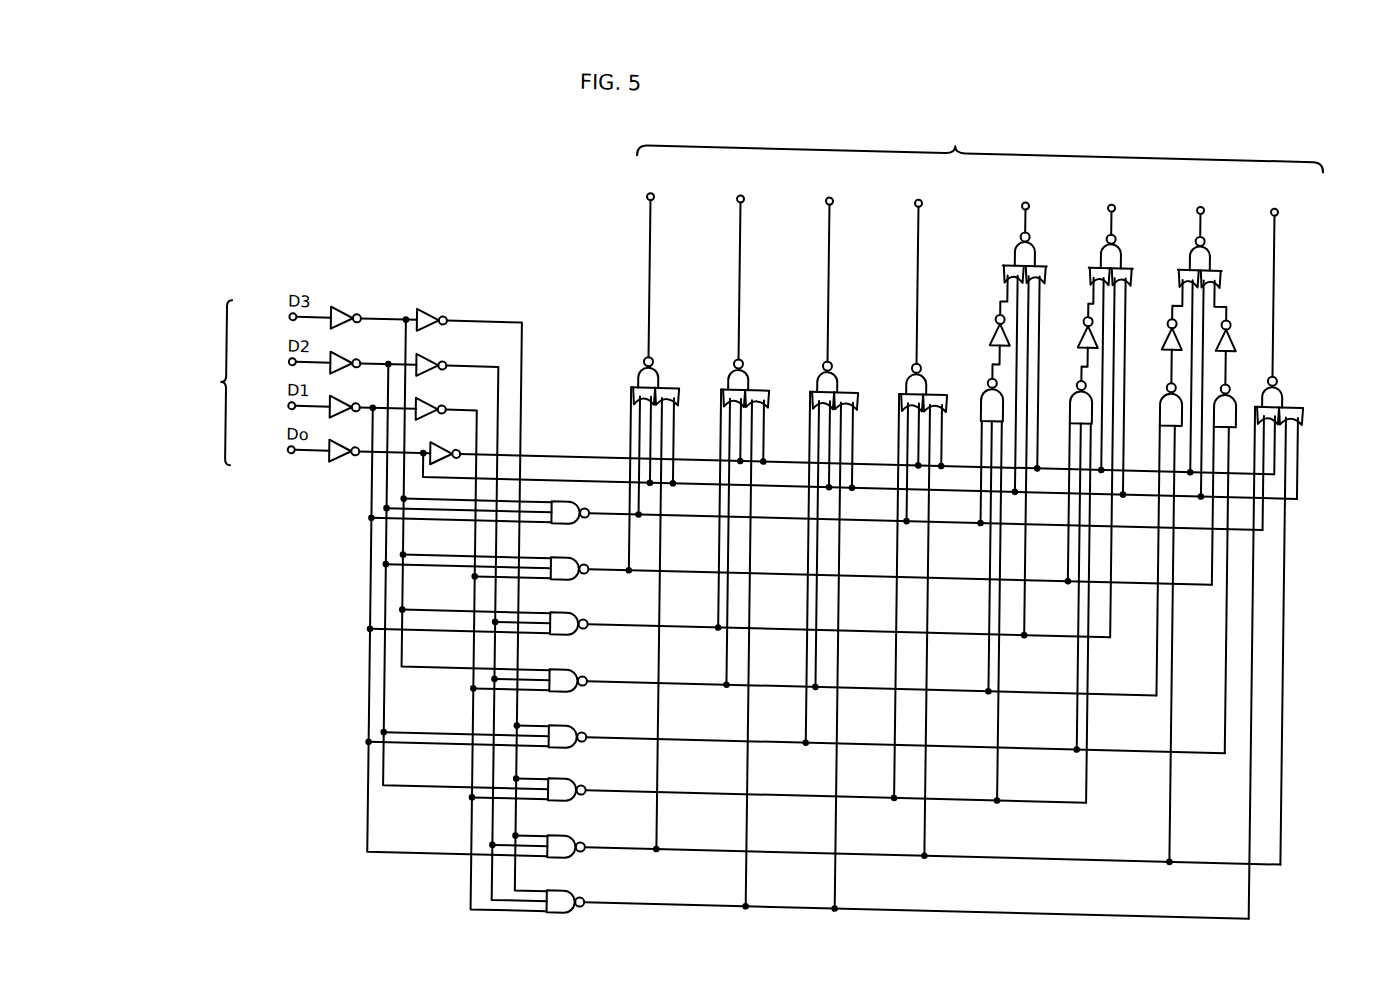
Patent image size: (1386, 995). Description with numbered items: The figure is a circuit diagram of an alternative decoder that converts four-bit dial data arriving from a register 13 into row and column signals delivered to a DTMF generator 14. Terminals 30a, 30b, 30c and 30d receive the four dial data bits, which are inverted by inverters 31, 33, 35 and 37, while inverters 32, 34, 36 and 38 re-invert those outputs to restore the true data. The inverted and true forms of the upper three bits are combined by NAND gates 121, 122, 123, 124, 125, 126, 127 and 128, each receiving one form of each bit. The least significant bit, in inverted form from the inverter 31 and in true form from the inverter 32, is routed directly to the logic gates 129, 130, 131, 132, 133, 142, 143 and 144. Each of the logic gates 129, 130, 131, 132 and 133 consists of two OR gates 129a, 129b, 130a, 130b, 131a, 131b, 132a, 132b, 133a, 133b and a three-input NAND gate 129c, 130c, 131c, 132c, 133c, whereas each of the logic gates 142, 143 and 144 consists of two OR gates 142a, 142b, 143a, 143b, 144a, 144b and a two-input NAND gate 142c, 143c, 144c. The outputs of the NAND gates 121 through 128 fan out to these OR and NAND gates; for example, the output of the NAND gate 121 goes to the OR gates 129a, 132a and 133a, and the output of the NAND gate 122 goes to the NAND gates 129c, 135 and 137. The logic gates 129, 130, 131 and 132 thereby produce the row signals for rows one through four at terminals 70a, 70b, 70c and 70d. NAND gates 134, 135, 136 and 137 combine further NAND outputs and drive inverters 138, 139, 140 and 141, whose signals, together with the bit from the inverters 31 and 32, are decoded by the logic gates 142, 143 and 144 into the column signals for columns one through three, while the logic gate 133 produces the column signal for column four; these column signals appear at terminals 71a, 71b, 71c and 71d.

The register 13 is at (171, 381).
The DTMF generator 14 is at (980, 140).
The terminal 30a is at (286, 461).
The terminal 30b is at (286, 417).
The terminal 30c is at (286, 373).
The terminal 30d is at (286, 328).
The inverter 31 is at (344, 471).
The inverter 32 is at (440, 449).
The inverter 33 is at (348, 427).
The inverter 34 is at (436, 409).
The inverter 35 is at (348, 383).
The inverter 36 is at (436, 365).
The inverter 37 is at (348, 338).
The inverter 38 is at (436, 320).
The terminal 70a is at (649, 195).
The terminal 70b is at (739, 195).
The terminal 70c is at (828, 195).
The terminal 70d is at (917, 195).
The terminal 71a is at (1024, 195).
The terminal 71b is at (1110, 195).
The terminal 71c is at (1199, 195).
The terminal 71d is at (1273, 195).
The NAND gate 121 is at (577, 505).
The NAND gate 122 is at (577, 561).
The NAND gate 123 is at (577, 616).
The NAND gate 124 is at (577, 673).
The NAND gate 125 is at (577, 729).
The NAND gate 126 is at (577, 782).
The NAND gate 127 is at (577, 839).
The NAND gate 128 is at (577, 894).
The logic gate 129 is at (652, 581).
The OR gate 129a is at (630, 398).
The OR gate 129b is at (678, 403).
The 3-input NAND gate 129c is at (635, 381).
The logic gate 130 is at (740, 610).
The OR gate 130a is at (721, 388).
The OR gate 130b is at (756, 408).
The 3-input NAND gate 130c is at (747, 382).
The logic gate 131 is at (833, 611).
The OR gate 131a is at (820, 389).
The OR gate 131b is at (853, 404).
The 3-input NAND gate 131c is at (836, 355).
The logic gate 132 is at (917, 589).
The OR gate 132a is at (898, 395).
The OR gate 132b is at (940, 406).
The 3-input NAND gate 132c is at (905, 376).
The logic gate 133 is at (1309, 628).
The OR gate 133a is at (1292, 396).
The OR gate 133b is at (1304, 412).
The 3-input NAND gate 133c is at (1281, 380).
The NAND gate 134 is at (978, 395).
The NAND gate 135 is at (1068, 395).
The NAND gate 136 is at (1158, 394).
The NAND gate 137 is at (1234, 397).
The inverter 138 is at (988, 333).
The inverter 139 is at (1076, 333).
The inverter 140 is at (1160, 334).
The inverter 141 is at (1227, 326).
The logic gate 142 is at (1013, 417).
The OR gate 142a is at (998, 274).
The OR gate 142b is at (1037, 276).
The 2-input NAND gate 142c is at (1009, 248).
The logic gate 143 is at (1121, 426).
The OR gate 143a is at (1100, 272).
The OR gate 143b is at (1124, 274).
The 2-input NAND gate 143c is at (1100, 248).
The logic gate 144 is at (1210, 361).
The OR gate 144a is at (1188, 276).
The OR gate 144b is at (1217, 272).
The 2-input NAND gate 144c is at (1187, 252).